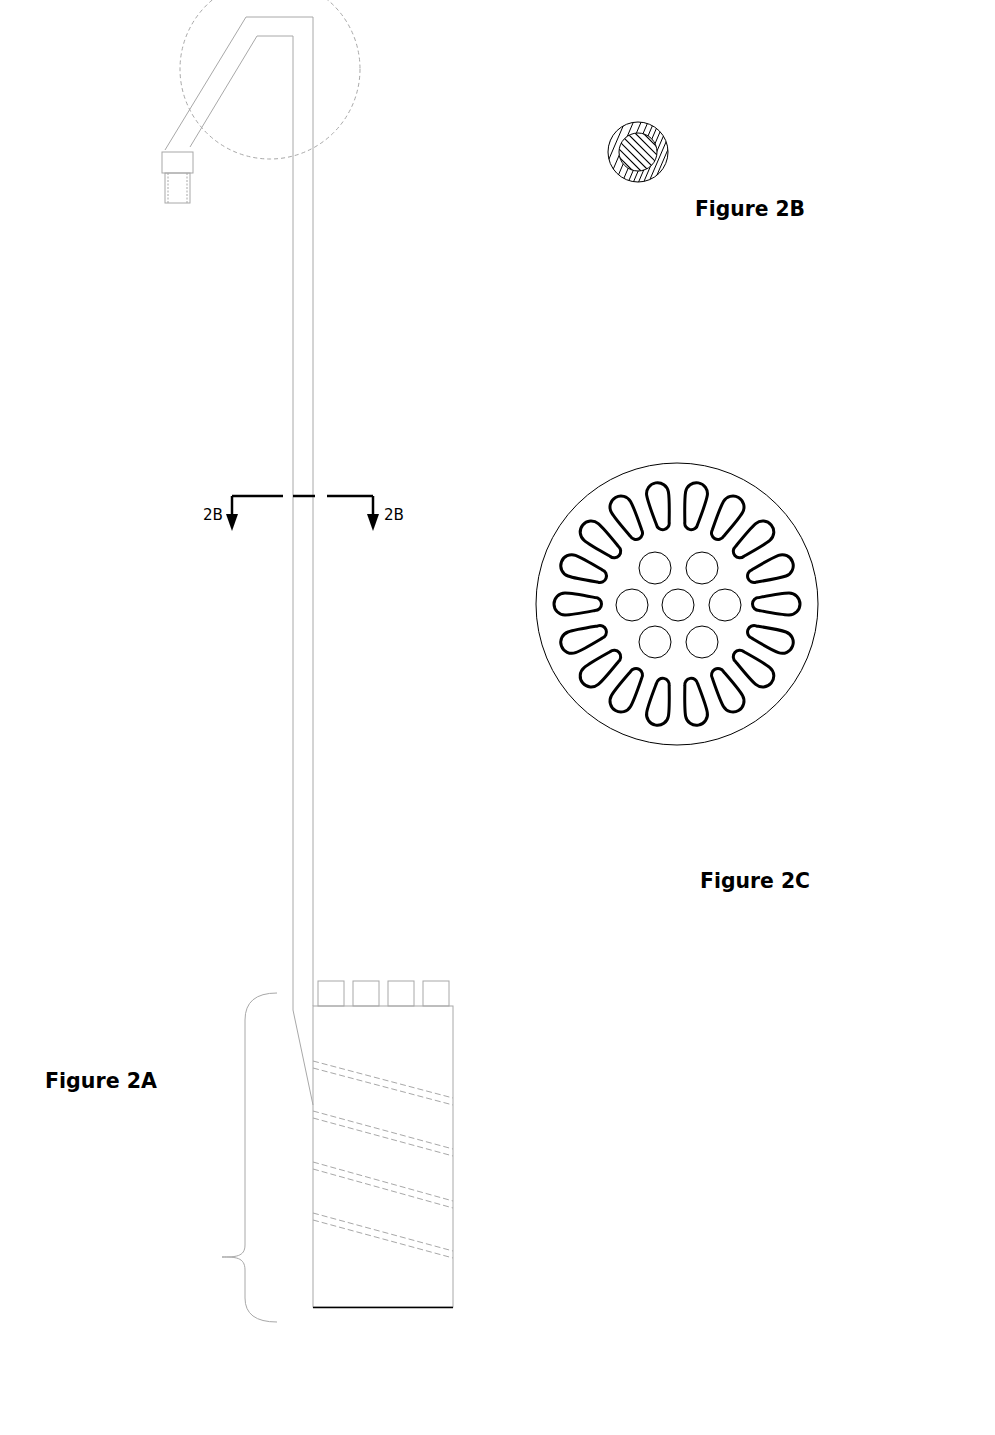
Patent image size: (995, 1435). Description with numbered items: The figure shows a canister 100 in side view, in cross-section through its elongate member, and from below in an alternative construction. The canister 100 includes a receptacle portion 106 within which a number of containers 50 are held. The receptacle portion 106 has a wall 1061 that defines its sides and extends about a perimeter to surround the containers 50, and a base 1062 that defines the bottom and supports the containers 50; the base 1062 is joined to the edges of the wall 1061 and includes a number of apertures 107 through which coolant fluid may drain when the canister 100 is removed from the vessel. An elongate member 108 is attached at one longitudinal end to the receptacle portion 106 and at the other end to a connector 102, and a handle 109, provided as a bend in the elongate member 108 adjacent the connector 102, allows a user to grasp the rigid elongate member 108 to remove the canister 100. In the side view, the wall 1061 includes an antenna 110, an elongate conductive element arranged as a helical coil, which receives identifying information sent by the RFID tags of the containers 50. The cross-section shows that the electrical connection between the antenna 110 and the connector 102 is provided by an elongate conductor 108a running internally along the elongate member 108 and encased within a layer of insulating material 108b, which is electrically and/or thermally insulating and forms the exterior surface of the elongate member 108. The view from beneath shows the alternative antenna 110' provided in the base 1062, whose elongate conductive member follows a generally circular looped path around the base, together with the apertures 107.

In FIG. 2A, the canister 100 is at (228, 705).
In FIG. 2A, the connector 102 is at (163, 180).
In FIG. 2A, the receptacle portion 106 is at (230, 1157).
In FIG. 2A, the wall 1061 is at (415, 1043).
In FIG. 2A, the base 1062 is at (413, 1307).
In FIG. 2C, the base 1062 is at (786, 667).
In FIG. 2C, the apertures 107 is at (697, 553).
In FIG. 2A, the elongate member 108 is at (292, 353).
In FIG. 2B, the elongate conductor 108a is at (608, 152).
In FIG. 2B, the insulating material 108b is at (668, 152).
In FIG. 2A, the handle 109 is at (340, 130).
In FIG. 2A, the antenna 110 is at (474, 1159).
In FIG. 2C, the antenna 110' is at (681, 548).
In FIG. 2A, the containers 50 is at (332, 980).